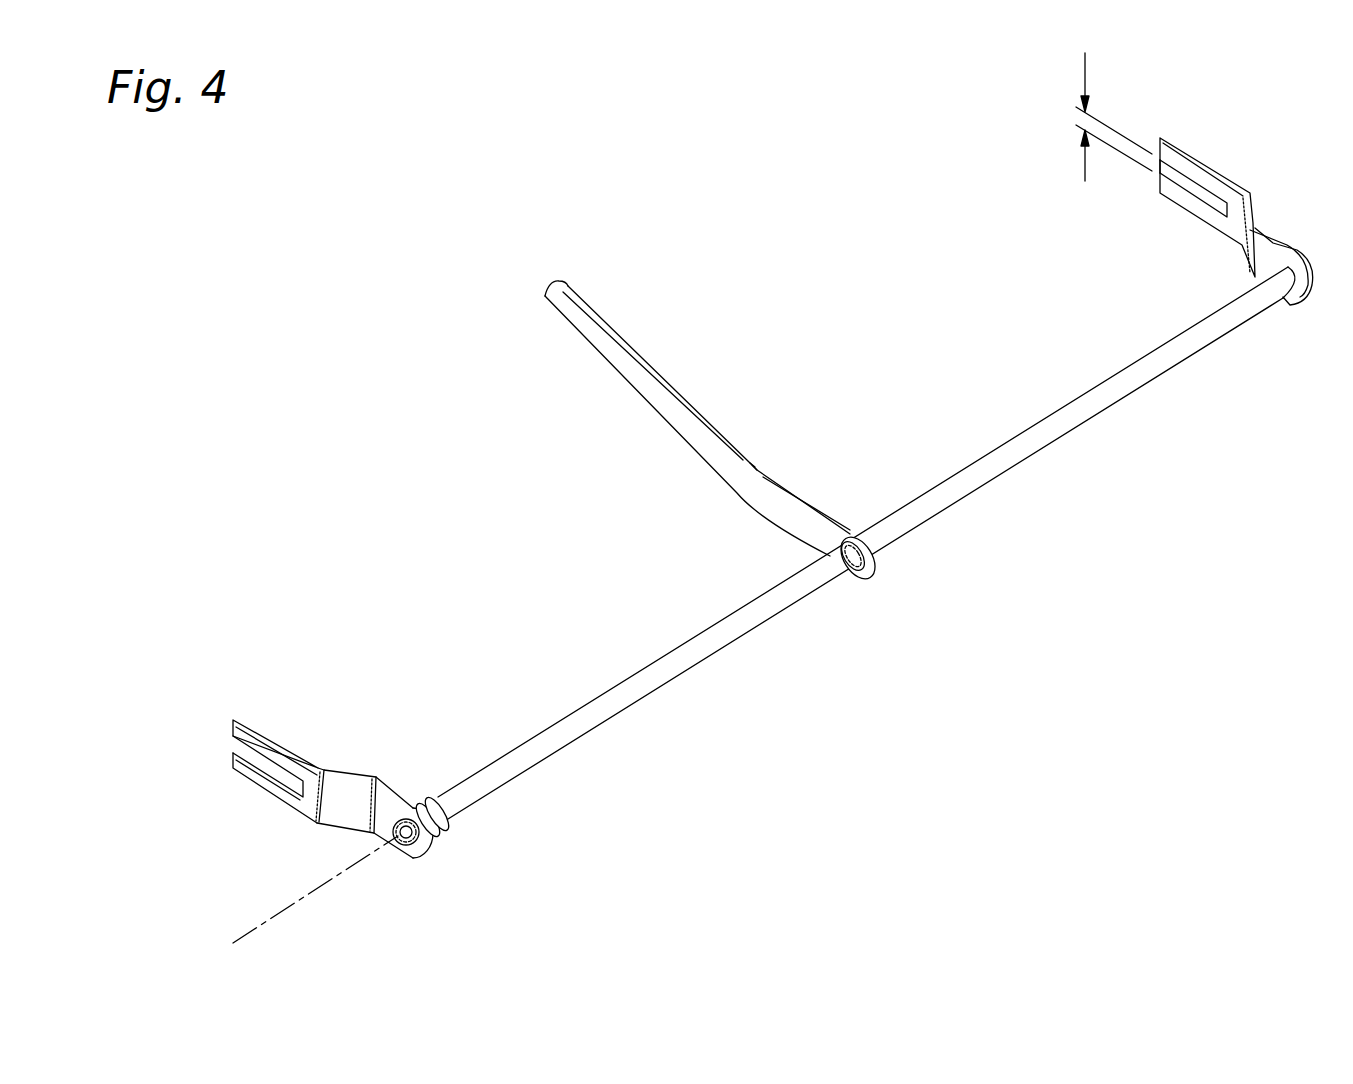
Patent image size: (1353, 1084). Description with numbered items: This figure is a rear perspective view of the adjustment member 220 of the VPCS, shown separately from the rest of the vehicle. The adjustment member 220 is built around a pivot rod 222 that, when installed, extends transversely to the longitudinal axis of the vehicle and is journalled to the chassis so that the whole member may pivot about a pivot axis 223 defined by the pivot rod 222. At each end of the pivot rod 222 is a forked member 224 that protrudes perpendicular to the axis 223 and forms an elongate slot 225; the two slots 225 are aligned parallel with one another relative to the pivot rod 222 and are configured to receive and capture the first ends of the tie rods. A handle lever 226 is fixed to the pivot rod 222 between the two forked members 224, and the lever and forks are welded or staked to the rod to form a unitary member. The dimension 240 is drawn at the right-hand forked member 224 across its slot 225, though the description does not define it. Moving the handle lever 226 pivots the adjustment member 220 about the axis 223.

The adjustment member 220 is at (947, 598).
The pivot rod 222 is at (619, 714).
The pivot axis 223 is at (257, 925).
The forked member 224 is at (272, 735).
The elongate slot 225 is at (233, 742).
The handle lever 226 is at (606, 320).
The slot width dimension 240 is at (1085, 175).